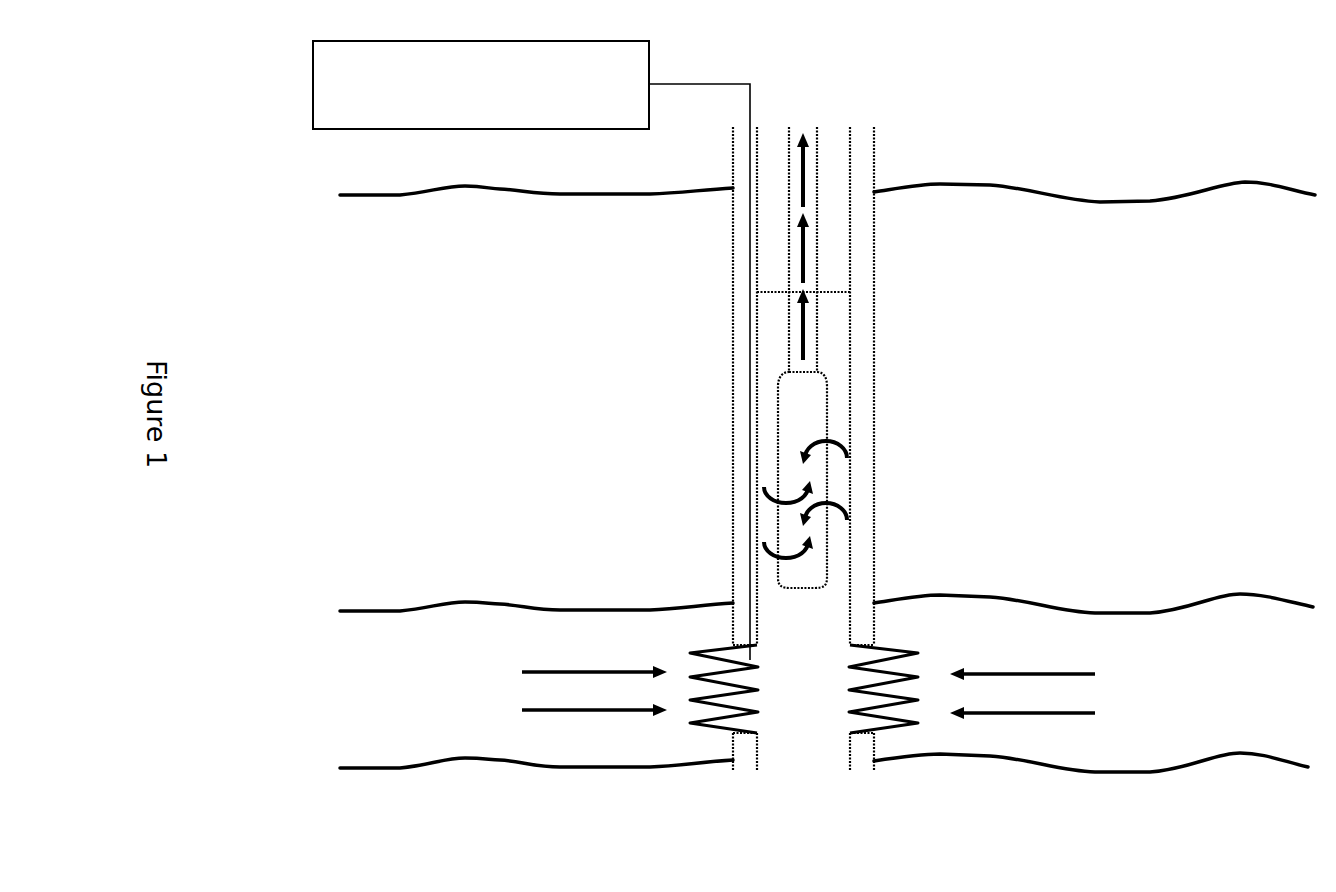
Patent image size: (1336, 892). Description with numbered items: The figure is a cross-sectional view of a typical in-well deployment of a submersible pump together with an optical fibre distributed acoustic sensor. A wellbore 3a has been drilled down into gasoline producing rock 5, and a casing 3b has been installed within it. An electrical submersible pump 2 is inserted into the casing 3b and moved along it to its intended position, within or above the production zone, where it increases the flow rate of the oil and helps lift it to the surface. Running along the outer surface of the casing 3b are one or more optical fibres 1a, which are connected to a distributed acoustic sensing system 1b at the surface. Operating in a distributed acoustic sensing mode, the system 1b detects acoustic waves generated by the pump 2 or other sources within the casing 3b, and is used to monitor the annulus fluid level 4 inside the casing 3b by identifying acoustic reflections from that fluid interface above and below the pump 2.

The optical fibre 1a is at (738, 240).
The distributed acoustic sensing system 1b is at (303, 85).
The electrical submersible pump 2 is at (820, 420).
The wellbore 3a is at (888, 257).
The casing 3b is at (863, 494).
The annulus fluid level 4 is at (762, 299).
The gasoline producing rock 5 is at (403, 621).